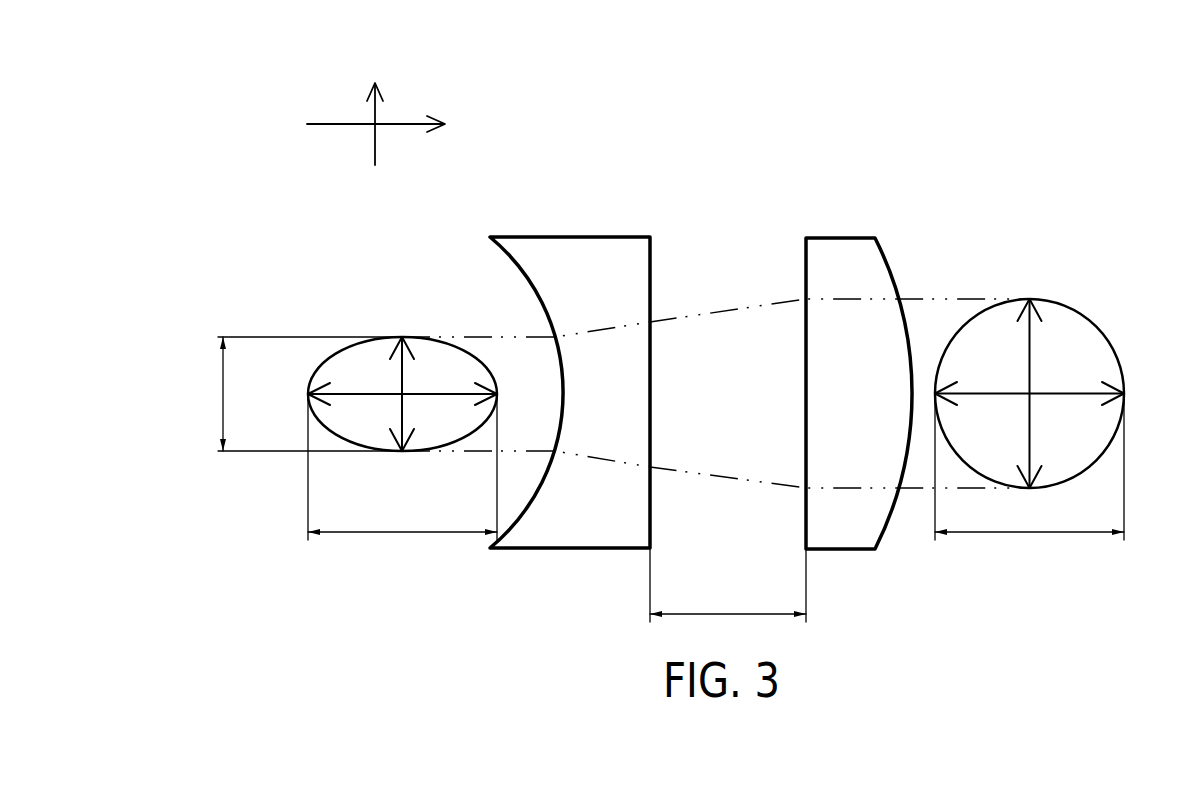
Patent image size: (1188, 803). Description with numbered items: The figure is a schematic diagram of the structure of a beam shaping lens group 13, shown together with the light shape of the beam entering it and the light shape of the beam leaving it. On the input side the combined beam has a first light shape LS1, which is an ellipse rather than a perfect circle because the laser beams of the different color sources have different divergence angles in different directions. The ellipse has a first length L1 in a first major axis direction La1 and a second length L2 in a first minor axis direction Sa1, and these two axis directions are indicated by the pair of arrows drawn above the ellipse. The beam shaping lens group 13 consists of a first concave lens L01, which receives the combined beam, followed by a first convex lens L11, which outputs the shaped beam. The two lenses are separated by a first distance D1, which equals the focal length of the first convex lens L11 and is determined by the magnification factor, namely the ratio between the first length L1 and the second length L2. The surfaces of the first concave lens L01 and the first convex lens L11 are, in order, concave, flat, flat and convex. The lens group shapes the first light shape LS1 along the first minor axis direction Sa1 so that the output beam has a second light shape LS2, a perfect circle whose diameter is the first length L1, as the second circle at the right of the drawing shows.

The beam shaping lens group 13 is at (556, 0).
The first concave lens L01 is at (570, 237).
The first convex lens L11 is at (839, 237).
The first light shape LS1 is at (402, 337).
The second light shape LS2 is at (1063, 300).
The first length L1 is at (716, 467).
The second length L2 is at (291, 394).
The first distance D1 is at (728, 585).
The first minor axis direction Sa1 is at (377, 108).
The first major axis direction La1 is at (400, 128).